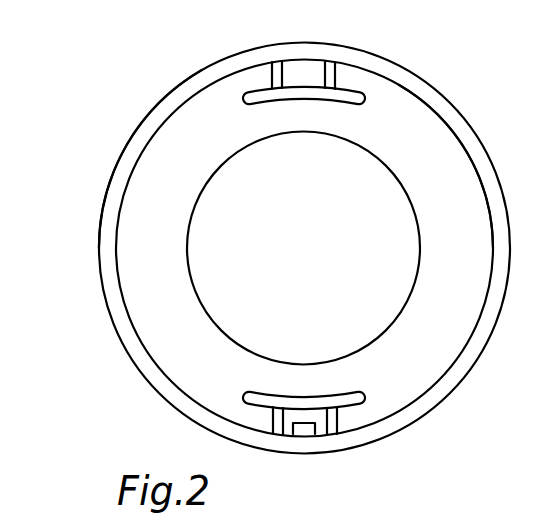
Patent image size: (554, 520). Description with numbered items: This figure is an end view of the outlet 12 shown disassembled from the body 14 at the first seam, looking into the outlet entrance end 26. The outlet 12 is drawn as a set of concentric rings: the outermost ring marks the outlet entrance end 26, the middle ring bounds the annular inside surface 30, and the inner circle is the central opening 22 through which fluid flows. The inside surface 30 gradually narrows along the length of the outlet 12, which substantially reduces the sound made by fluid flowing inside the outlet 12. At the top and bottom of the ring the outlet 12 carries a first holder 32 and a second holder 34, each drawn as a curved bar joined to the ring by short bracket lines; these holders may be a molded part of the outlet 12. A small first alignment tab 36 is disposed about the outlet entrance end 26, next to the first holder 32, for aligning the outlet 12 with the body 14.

The outlet 12 is at (142, 73).
The body 14 is at (535, 497).
The central opening 22 is at (420, 250).
The outlet entrance end 26 is at (99, 250).
The inside surface 30 is at (462, 182).
The first holder 32 is at (288, 402).
The second holder 34 is at (288, 88).
The first alignment tab 36 is at (303, 432).